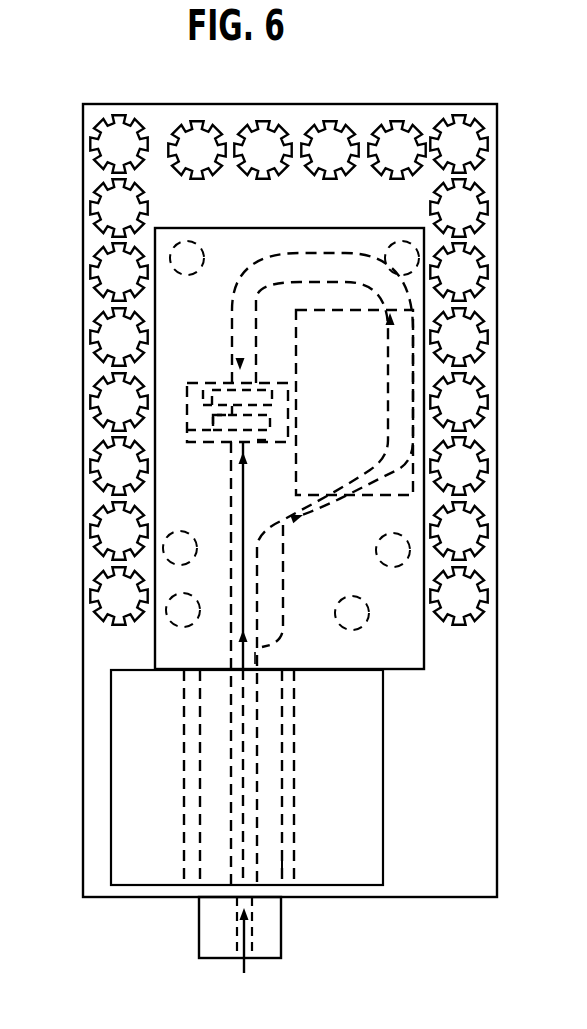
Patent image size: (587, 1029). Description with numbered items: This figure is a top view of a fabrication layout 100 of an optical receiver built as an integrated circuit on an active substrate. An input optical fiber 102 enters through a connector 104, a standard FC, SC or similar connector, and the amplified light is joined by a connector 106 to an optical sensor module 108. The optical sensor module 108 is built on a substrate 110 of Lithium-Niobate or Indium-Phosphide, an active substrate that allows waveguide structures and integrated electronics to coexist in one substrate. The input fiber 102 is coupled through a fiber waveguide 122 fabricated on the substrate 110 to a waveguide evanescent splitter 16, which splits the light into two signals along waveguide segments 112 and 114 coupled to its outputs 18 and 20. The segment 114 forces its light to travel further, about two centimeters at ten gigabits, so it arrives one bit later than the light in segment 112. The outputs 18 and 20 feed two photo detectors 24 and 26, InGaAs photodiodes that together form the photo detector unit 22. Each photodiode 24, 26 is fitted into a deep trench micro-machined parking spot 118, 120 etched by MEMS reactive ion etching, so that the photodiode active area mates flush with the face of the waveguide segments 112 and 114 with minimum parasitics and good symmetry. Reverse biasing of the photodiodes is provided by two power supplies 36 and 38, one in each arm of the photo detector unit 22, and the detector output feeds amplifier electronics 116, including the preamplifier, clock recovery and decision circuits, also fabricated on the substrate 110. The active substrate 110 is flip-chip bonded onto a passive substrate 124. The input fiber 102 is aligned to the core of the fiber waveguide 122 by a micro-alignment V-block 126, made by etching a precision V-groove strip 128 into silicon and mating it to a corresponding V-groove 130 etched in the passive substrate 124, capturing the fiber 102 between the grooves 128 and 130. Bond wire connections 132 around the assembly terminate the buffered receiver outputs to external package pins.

The fabrication layout 100 is at (143, 91).
The bond wire connections 132 is at (282, 106).
The photo detector unit 22 is at (486, 238).
The waveguide segment 114 is at (262, 290).
The amplifier electronics 116 is at (398, 340).
The power supply 38 is at (207, 378).
The parking spot 120 is at (205, 393).
The photo detector 26 is at (268, 397).
The photo detector 24 is at (187, 430).
The parking spot 118 is at (275, 430).
The waveguide segment 112 is at (241, 490).
The power supply 36 is at (260, 440).
The substrate 110 is at (407, 508).
The output 18 is at (233, 533).
The output 20 is at (283, 540).
The waveguide evanescent splitter 16 is at (393, 615).
The optical sensor module 108 is at (514, 687).
The fiber waveguide 122 is at (255, 658).
The passive substrate 124 is at (478, 850).
The V-block 126 is at (377, 872).
The V-groove strip 128 is at (282, 867).
The V-groove 130 is at (183, 896).
The connector 106 is at (205, 896).
The input optical fiber 102 is at (267, 922).
The connector 104 is at (257, 943).